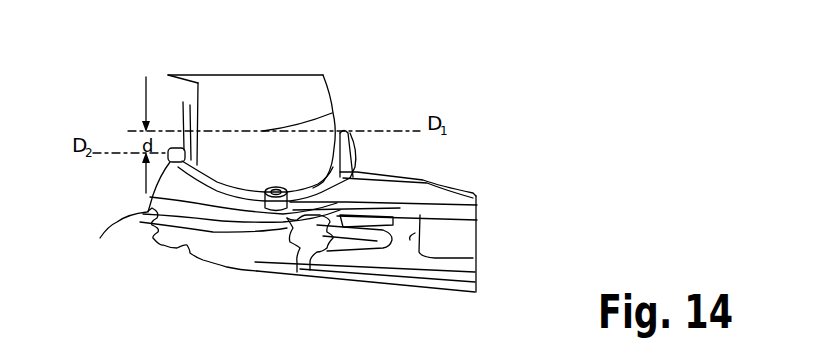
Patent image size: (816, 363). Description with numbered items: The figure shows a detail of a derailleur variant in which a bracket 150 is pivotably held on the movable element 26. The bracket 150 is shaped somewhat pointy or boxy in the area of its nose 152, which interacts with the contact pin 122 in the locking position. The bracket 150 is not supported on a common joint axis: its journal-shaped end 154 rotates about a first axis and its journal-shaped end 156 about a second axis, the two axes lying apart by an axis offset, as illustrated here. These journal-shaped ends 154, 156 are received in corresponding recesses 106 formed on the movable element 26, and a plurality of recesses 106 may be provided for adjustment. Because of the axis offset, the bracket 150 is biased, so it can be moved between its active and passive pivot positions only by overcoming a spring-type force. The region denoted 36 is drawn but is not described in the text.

The movable element 26 is at (310, 87).
The mounting portion 36 is at (175, 248).
The recess 106 is at (187, 107).
The contact pin 122 is at (300, 263).
The bracket 150 is at (477, 198).
The nose 152 is at (257, 215).
The journal-shaped end 154 is at (348, 132).
The journal-shaped end 156 is at (100, 238).